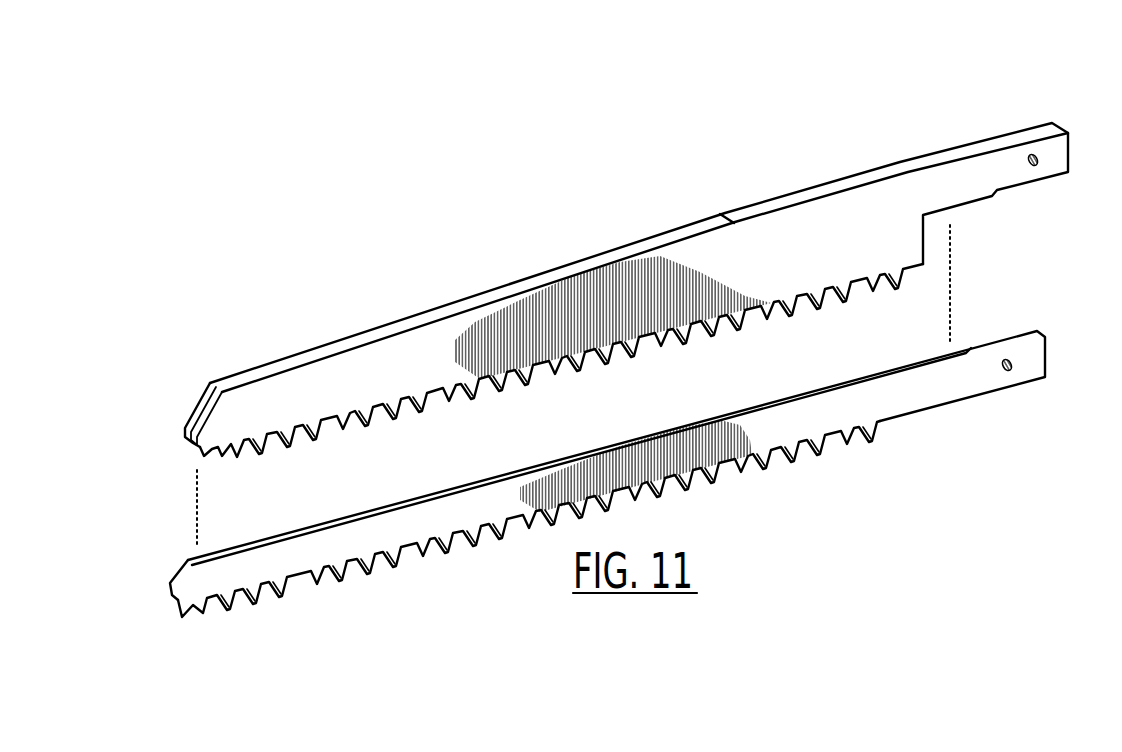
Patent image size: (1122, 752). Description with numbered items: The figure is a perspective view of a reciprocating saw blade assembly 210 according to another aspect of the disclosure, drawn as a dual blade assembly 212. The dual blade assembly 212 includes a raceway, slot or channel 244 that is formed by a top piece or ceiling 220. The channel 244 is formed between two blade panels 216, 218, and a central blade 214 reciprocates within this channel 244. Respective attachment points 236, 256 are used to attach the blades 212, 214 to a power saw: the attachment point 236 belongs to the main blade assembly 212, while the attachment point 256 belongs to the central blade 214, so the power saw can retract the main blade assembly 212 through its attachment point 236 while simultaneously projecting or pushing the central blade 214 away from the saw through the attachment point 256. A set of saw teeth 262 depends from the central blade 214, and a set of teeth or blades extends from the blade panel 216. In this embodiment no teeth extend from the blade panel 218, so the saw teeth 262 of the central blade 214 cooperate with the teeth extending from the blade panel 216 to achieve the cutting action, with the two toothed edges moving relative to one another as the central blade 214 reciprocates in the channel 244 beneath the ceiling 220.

The assembly 210 is at (893, 106).
The dual blade assembly 212 is at (701, 194).
The central blade 214 is at (782, 430).
The blade panel 216 is at (778, 273).
The blade panel 218 is at (204, 390).
The top piece or ceiling 220 is at (571, 268).
The attachment point 236 is at (1040, 161).
The channel 244 is at (190, 422).
The attachment point 256 is at (1012, 368).
The saw teeth 262 is at (433, 548).